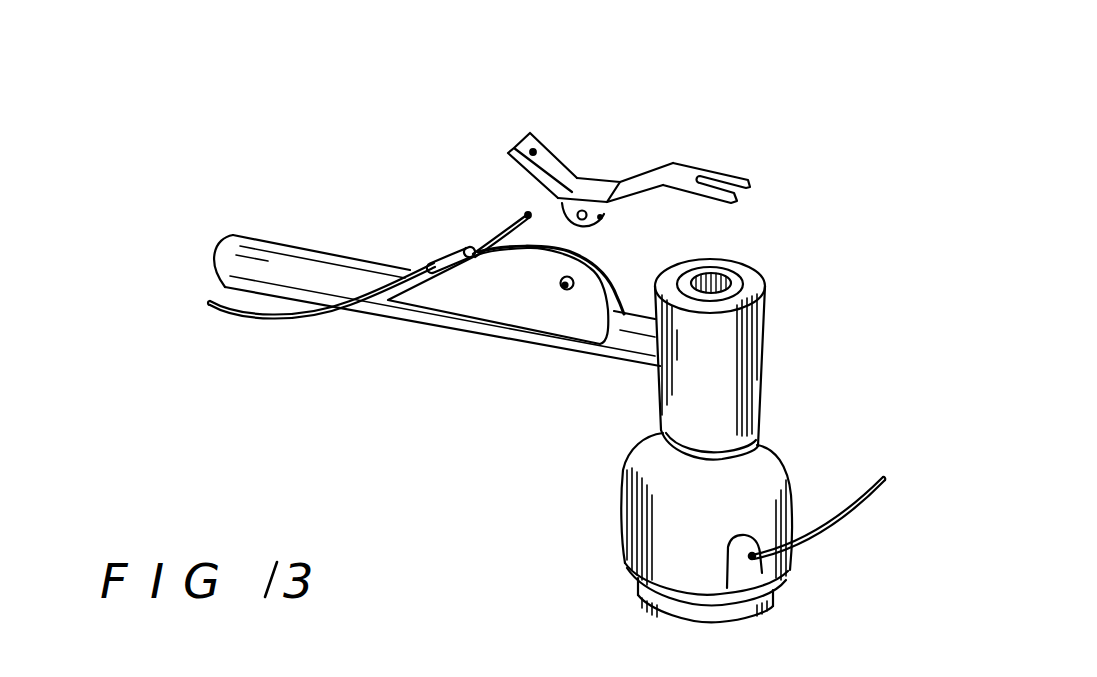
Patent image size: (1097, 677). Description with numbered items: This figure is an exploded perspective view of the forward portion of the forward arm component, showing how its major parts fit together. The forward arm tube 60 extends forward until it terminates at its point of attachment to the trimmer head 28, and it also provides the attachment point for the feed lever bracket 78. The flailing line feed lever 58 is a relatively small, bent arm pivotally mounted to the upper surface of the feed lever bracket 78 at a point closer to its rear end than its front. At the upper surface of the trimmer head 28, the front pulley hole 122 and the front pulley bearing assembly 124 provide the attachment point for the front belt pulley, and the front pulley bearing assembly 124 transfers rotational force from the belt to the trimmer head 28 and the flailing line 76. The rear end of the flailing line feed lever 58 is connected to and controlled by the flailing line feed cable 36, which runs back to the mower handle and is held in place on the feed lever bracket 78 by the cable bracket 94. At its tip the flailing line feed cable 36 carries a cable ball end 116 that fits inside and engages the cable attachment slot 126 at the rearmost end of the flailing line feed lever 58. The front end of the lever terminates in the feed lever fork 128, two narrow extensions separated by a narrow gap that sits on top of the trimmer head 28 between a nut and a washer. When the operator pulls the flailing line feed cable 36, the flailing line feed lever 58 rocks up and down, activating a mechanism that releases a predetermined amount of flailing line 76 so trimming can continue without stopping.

The trimmer head 28 is at (754, 475).
The flailing line feed cable 36 is at (369, 299).
The flailing line feed lever 58 is at (626, 138).
The forward arm tube 60 is at (425, 328).
The flailing line 76 is at (876, 472).
The feed lever bracket 78 is at (525, 308).
The cable bracket 94 is at (445, 251).
The cable ball end 116 is at (518, 208).
The front pulley hole 122 is at (733, 276).
The front pulley bearing assembly 124 is at (771, 336).
The cable attachment slot 126 is at (513, 140).
The feed lever fork 128 is at (757, 189).